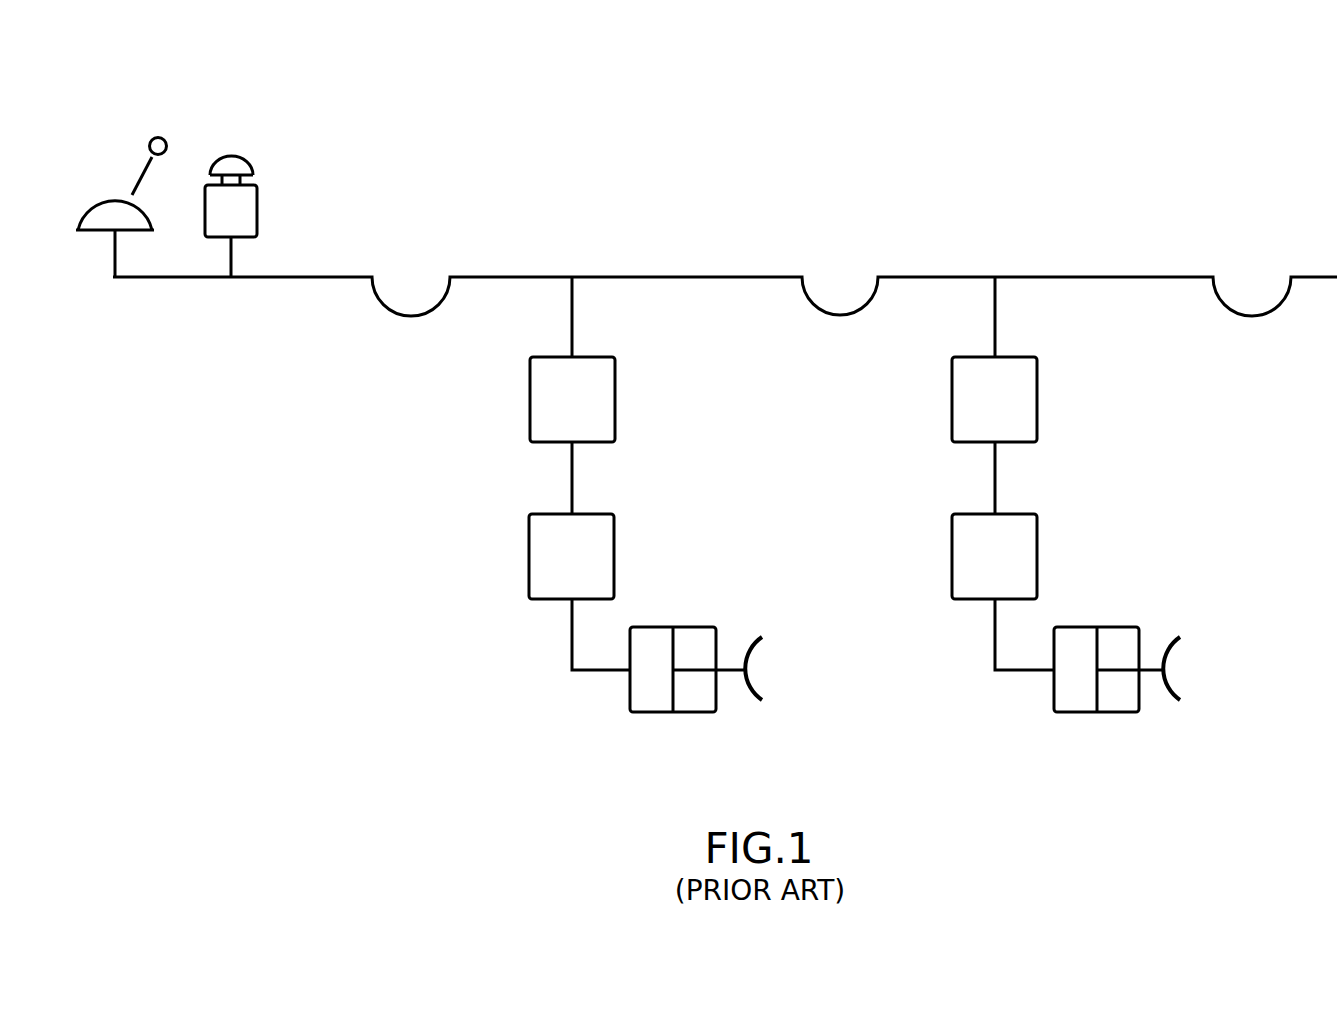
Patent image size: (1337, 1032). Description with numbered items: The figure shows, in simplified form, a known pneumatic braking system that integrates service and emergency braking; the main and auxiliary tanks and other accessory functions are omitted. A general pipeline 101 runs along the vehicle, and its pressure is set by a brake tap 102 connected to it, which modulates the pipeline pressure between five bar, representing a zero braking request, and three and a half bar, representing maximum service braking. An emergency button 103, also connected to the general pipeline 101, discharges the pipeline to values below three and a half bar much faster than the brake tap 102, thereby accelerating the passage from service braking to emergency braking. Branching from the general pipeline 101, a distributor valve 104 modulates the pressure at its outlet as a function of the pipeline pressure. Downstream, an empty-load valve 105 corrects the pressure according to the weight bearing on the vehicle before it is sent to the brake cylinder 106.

The general pipeline 101 is at (343, 272).
The brake tap 102 is at (105, 207).
The emergency button 103 is at (242, 210).
The distributor valve 104 is at (783, 399).
The empty-load valve 105 is at (783, 556).
The brake cylinder 106 is at (658, 683).